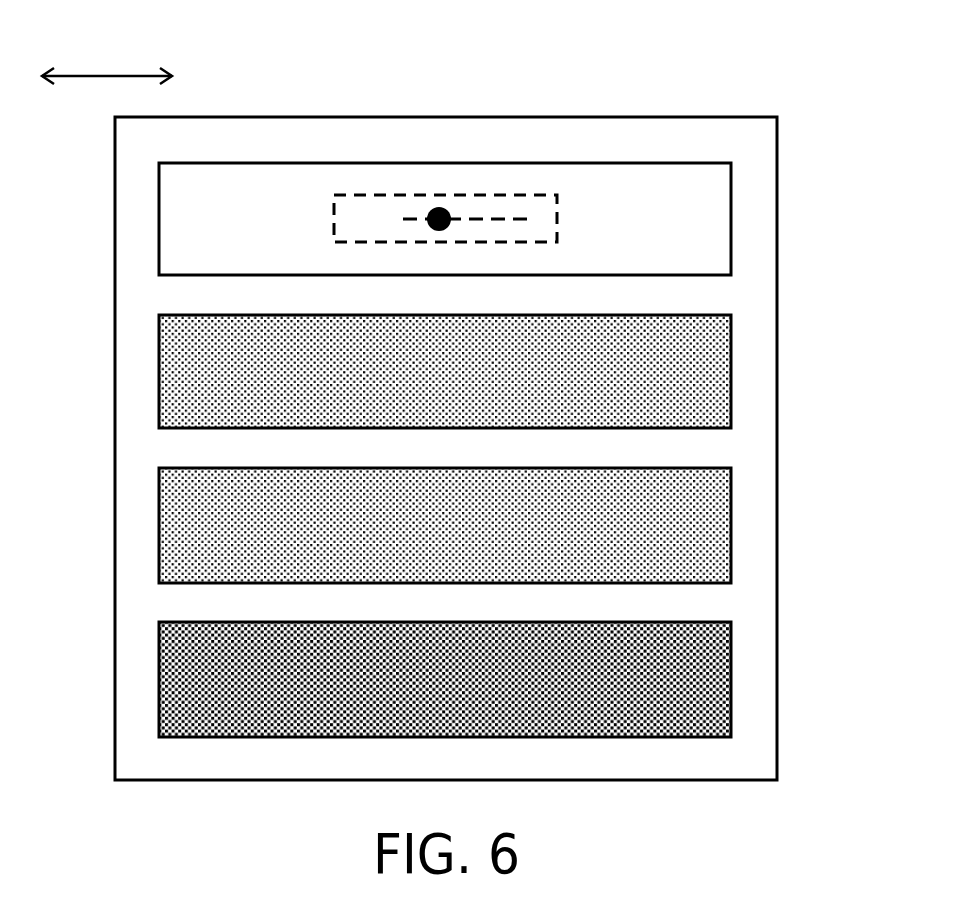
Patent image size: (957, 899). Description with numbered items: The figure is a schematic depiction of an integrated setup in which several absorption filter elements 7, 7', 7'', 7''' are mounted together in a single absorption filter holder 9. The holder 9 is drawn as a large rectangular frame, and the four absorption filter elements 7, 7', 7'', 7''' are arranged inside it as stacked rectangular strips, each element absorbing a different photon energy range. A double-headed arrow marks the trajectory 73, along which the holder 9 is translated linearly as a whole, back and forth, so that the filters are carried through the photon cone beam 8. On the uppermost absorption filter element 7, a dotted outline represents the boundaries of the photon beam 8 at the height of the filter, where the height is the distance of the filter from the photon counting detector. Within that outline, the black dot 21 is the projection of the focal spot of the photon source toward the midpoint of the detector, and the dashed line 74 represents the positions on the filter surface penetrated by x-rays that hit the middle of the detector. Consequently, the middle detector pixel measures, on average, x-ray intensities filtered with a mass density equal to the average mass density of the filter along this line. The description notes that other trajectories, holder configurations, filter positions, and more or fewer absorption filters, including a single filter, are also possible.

The trajectory 73 is at (109, 76).
The absorption filter holder 9 is at (685, 138).
The absorption filter element 7 is at (505, 219).
The absorption filter element 7' is at (508, 371).
The absorption filter element 7'' is at (511, 525).
The absorption filter element 7''' is at (514, 679).
The photon cone beam 8 is at (357, 195).
The projection of the focal spot 21 is at (438, 207).
The dashed line 74 is at (502, 219).